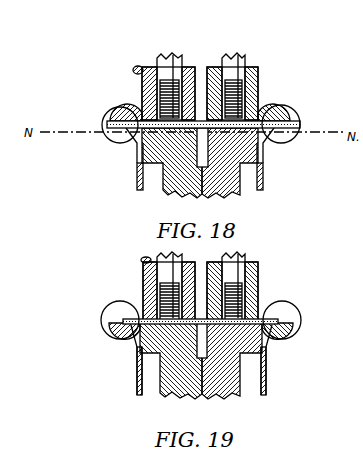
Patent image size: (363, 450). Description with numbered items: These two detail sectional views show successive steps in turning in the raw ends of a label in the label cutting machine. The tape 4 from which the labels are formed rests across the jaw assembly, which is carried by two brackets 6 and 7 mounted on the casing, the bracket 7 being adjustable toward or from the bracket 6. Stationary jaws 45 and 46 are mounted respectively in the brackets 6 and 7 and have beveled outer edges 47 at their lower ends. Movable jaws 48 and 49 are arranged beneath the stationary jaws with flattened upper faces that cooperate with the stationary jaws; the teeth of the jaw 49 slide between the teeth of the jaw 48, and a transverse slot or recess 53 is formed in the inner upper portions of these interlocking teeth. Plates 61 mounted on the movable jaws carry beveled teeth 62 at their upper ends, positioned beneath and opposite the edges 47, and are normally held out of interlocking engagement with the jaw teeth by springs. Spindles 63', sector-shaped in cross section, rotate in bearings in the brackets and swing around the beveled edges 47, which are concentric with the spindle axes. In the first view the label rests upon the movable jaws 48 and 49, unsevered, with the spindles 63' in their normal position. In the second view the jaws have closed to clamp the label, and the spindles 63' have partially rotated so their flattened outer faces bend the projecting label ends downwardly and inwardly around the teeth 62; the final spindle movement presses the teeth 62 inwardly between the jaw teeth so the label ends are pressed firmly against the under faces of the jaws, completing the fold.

In FIG. 18, the tape 4 is at (108, 125).
In FIG. 19, the tape 4 is at (200, 321).
In FIG. 18, the bracket 6 is at (258, 63).
In FIG. 19, the bracket 6 is at (258, 272).
In FIG. 18, the bracket 7 is at (137, 66).
In FIG. 19, the bracket 7 is at (145, 264).
In FIG. 18, the stationary jaw 45 is at (259, 91).
In FIG. 19, the stationary jaw 45 is at (259, 291).
In FIG. 18, the stationary jaw 46 is at (142, 84).
In FIG. 19, the stationary jaw 46 is at (143, 291).
In FIG. 18, the beveled outer edges 47 is at (104, 117).
In FIG. 19, the beveled outer edges 47 is at (125, 314).
In FIG. 18, the movable jaw 48 is at (240, 191).
In FIG. 19, the movable jaw 48 is at (233, 399).
In FIG. 18, the movable jaw 49 is at (167, 191).
In FIG. 19, the movable jaw 49 is at (167, 393).
In FIG. 18, the transverse slot or recess 53 is at (202, 147).
In FIG. 19, the transverse slot or recess 53 is at (200, 346).
In FIG. 18, the plates 61 is at (137, 176).
In FIG. 19, the plates 61 is at (137, 371).
In FIG. 18, the beveled teeth 62 is at (133, 140).
In FIG. 18, the spindles 63' is at (200, 102).
In FIG. 19, the spindles 63' is at (201, 344).